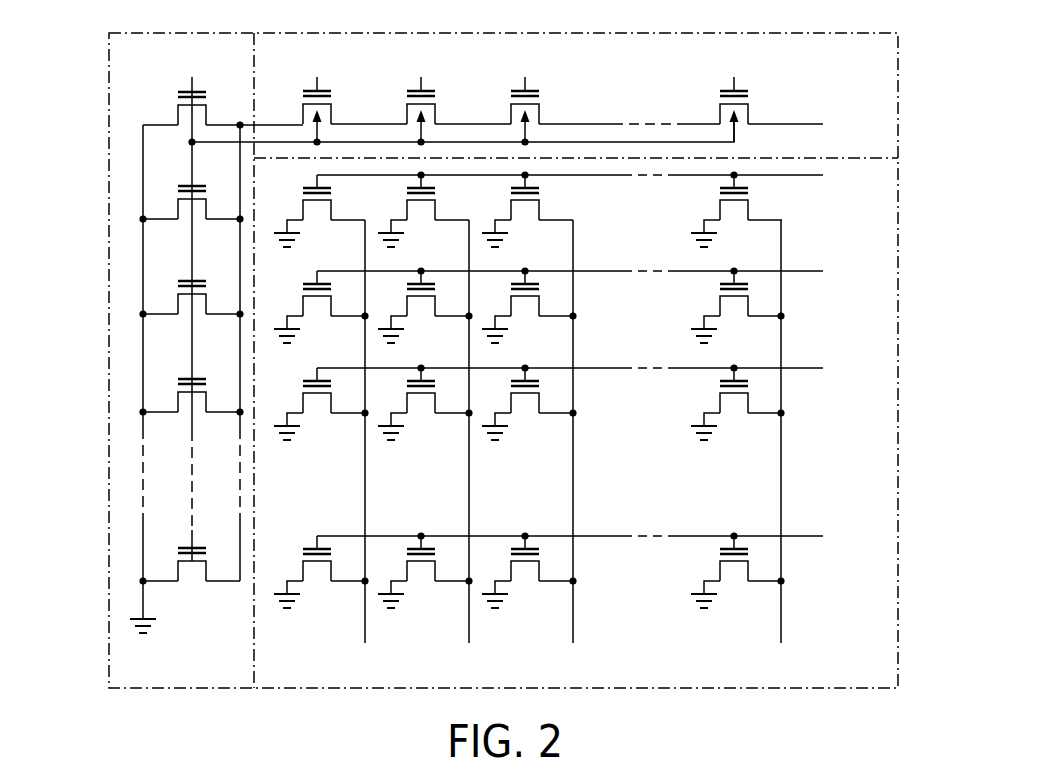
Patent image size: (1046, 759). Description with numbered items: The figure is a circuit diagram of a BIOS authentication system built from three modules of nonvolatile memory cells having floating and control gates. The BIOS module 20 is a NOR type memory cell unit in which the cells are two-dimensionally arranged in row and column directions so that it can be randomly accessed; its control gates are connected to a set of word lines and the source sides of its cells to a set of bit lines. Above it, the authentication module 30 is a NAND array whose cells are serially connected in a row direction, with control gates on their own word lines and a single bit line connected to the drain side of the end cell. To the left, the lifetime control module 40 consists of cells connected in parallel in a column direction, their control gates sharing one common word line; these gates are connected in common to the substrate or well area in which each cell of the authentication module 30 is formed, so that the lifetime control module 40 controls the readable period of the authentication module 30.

The BIOS module 20 is at (898, 430).
The authentication module 30 is at (898, 97).
The lifetime control module 40 is at (109, 646).